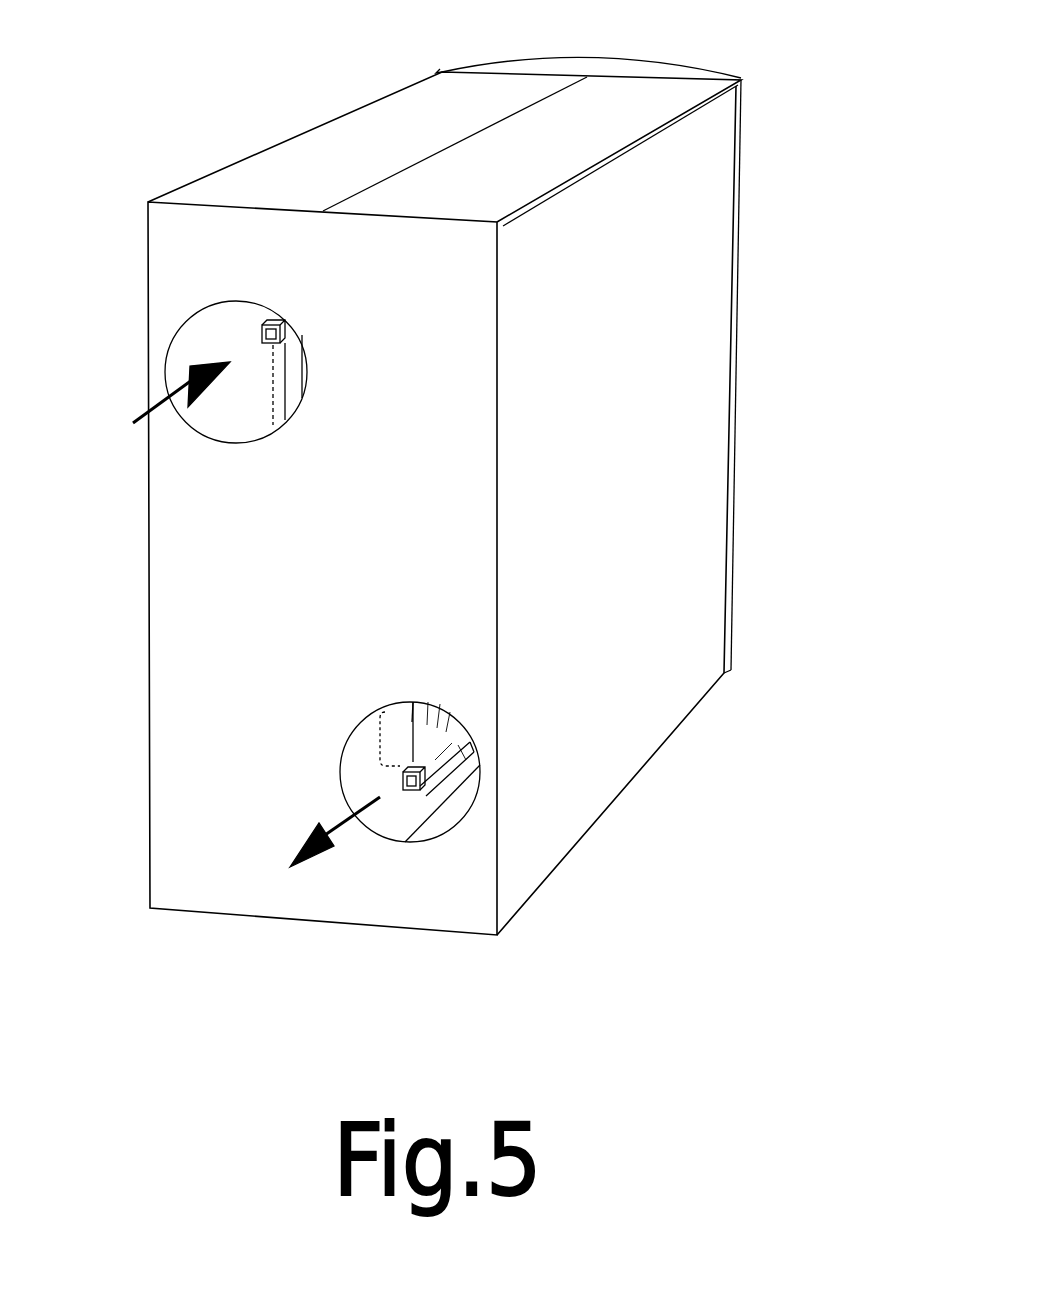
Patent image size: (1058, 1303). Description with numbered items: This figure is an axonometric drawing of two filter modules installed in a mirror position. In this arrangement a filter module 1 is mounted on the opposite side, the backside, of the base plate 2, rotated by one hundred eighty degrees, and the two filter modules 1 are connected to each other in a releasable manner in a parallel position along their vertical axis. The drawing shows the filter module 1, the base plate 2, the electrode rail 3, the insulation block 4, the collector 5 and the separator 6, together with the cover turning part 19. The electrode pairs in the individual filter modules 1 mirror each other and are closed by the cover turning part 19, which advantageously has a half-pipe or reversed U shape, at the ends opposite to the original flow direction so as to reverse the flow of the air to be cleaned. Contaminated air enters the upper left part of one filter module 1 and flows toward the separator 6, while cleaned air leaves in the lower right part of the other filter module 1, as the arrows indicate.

The filter module 1 is at (388, 125).
The base plate 2 is at (398, 813).
The electrode rail 3 is at (440, 762).
The insulation block 4 is at (400, 727).
The collector 5 is at (422, 730).
The separator 6 is at (413, 743).
The cover turning part 19 is at (620, 67).